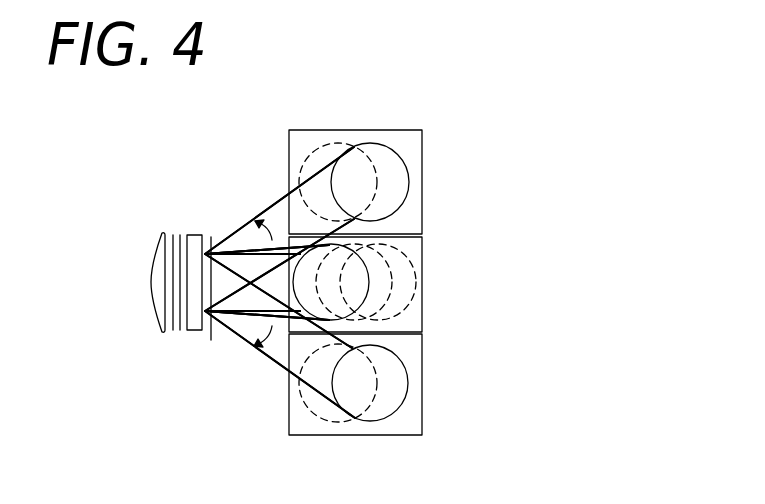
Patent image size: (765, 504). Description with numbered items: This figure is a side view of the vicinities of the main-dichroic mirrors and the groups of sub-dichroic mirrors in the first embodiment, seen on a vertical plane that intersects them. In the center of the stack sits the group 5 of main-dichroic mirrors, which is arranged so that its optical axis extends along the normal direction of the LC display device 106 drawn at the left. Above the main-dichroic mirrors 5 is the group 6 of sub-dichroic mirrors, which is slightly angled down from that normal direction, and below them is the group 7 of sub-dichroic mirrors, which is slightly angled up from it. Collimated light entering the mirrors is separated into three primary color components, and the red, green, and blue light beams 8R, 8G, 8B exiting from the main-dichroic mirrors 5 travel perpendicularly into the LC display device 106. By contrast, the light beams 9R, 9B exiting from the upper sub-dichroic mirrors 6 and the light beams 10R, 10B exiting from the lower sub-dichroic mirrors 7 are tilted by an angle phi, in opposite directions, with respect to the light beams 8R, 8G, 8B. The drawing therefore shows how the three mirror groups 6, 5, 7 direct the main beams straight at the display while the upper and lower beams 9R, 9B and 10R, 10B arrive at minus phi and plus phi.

The LC display device 106 is at (190, 332).
The group of sub-dichroic mirrors 6 is at (427, 130).
The group of main-dichroic mirrors 5 is at (427, 237).
The group of sub-dichroic mirrors 7 is at (427, 334).
The blue light beam 8B is at (250, 238).
The green light beam 8G is at (250, 238).
The red light beam 8R is at (250, 238).
The blue light beam 9B is at (276, 203).
The red light beam 9R is at (276, 203).
The blue light beam 10B is at (276, 362).
The red light beam 10R is at (276, 362).